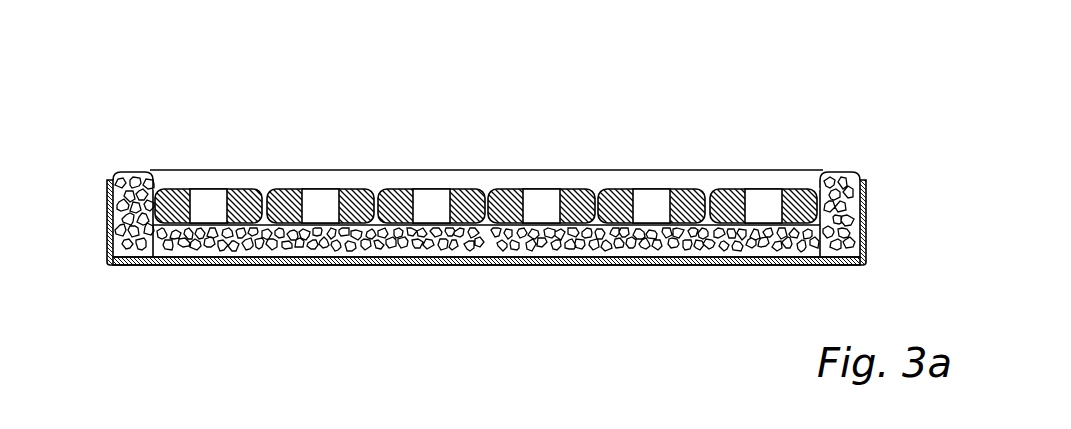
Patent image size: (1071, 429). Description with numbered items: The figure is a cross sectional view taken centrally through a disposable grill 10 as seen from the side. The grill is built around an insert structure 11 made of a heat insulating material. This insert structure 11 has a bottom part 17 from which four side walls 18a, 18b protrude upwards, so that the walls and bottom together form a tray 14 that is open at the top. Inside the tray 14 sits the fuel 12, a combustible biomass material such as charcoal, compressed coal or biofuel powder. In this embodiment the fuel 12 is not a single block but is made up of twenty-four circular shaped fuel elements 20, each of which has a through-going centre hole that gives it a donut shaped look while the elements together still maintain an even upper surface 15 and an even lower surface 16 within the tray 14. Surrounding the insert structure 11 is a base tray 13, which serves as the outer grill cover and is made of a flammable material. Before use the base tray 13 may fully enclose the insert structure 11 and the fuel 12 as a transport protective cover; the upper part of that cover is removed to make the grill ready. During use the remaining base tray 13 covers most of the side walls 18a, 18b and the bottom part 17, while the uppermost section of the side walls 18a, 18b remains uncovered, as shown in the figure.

The disposable grill 10 is at (132, 85).
The insert structure 11 is at (840, 173).
The fuel 12 is at (694, 142).
The base tray 13 is at (410, 260).
The tray 14 is at (348, 180).
The upper surface 15 is at (623, 189).
The lower surface 16 is at (613, 226).
The bottom part 17 is at (218, 238).
The side wall 18a is at (128, 205).
The side wall 18b is at (858, 212).
The circular shaped fuel element 20 is at (505, 188).